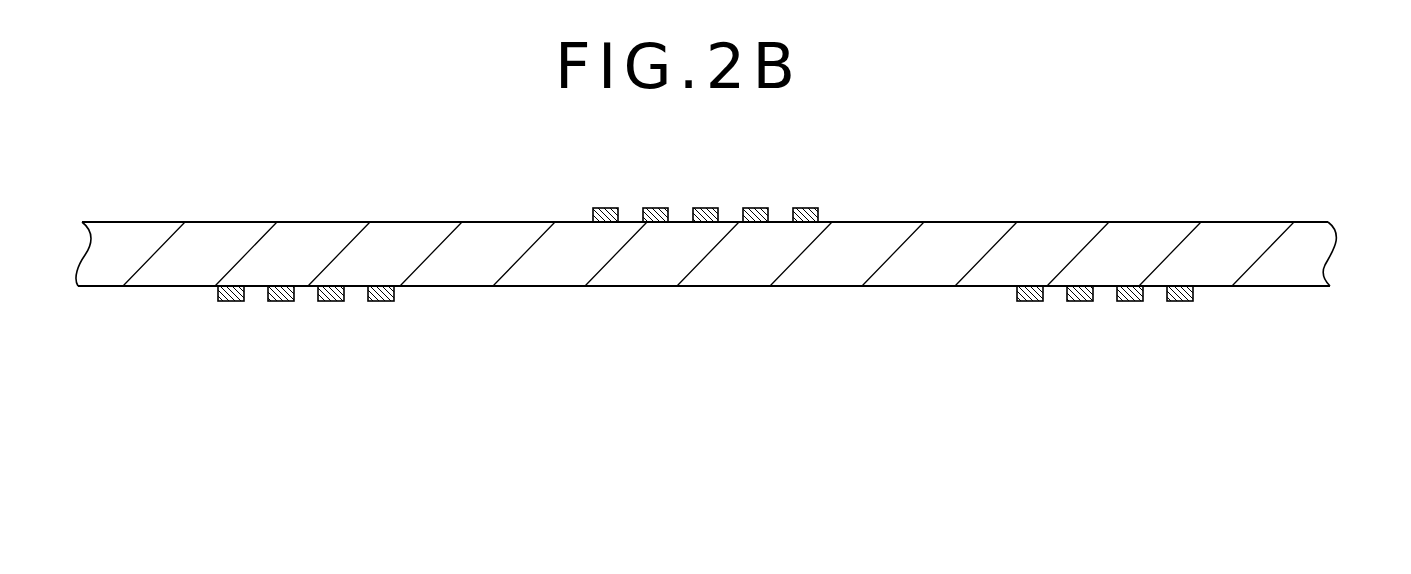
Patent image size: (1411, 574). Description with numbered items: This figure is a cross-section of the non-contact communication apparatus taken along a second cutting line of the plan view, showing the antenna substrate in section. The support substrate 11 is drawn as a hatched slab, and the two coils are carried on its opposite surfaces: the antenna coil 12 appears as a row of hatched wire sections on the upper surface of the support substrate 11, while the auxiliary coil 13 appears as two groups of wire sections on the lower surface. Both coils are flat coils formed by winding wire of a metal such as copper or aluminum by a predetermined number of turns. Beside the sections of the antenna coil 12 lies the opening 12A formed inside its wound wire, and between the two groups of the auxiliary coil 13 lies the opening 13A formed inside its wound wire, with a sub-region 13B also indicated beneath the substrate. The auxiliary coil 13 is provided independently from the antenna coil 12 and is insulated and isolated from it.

The support substrate 11 is at (1313, 255).
The antenna coil 12 is at (818, 190).
The opening 12A is at (1330, 187).
The auxiliary coil 13 is at (218, 318).
The opening 13A is at (1015, 382).
The lower pad non-formation sub-region 13B is at (1017, 318).